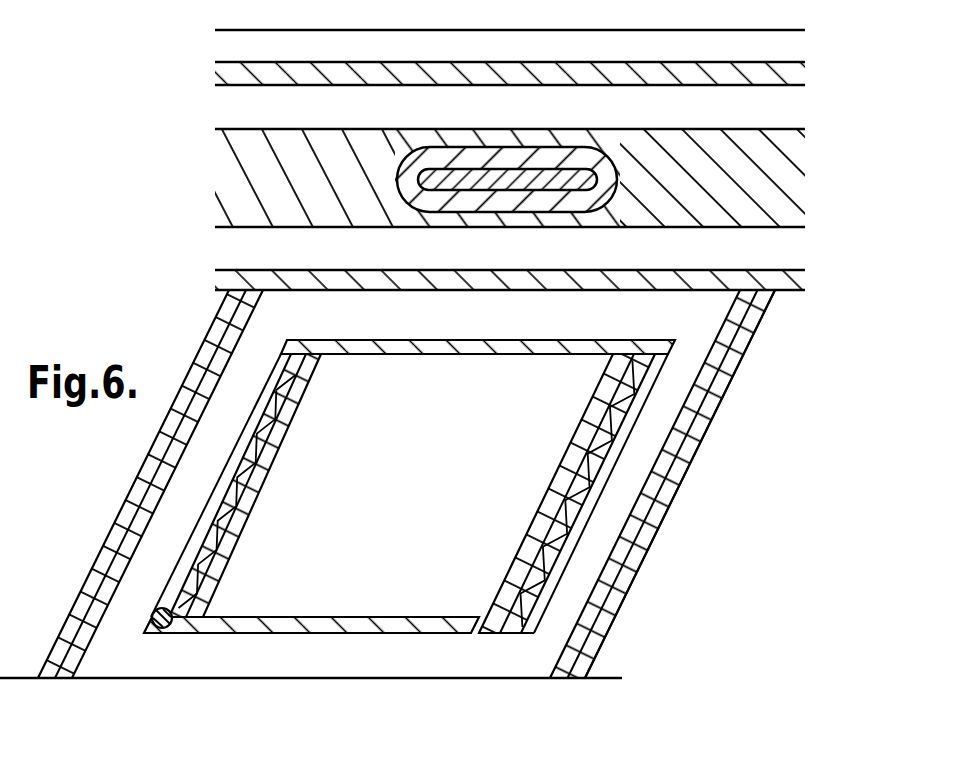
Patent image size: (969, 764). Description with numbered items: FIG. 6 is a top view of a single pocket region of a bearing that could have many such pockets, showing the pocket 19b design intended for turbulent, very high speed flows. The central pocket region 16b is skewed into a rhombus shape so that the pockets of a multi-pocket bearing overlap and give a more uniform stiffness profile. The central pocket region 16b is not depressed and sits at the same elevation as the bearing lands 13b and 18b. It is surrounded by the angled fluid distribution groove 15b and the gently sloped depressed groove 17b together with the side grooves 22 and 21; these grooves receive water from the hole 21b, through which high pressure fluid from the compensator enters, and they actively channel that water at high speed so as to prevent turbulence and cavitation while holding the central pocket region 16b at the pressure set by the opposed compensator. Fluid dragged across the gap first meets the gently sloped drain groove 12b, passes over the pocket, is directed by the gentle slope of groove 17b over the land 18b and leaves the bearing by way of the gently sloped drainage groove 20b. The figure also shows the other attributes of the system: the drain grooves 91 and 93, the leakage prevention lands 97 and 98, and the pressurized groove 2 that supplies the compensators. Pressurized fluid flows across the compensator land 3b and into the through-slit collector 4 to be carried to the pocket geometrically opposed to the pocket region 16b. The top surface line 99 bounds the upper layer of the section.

The pressurized groove 2 is at (240, 208).
The compensator land 3b is at (403, 173).
The through-slit collector 4 is at (418, 182).
The drain groove 91 is at (228, 70).
The drain groove 93 is at (227, 275).
The leakage prevention land 97 is at (770, 113).
The leakage prevention land 98 is at (760, 279).
The top surface 99 is at (783, 51).
The drain groove 12b is at (59, 665).
The land 13b is at (137, 587).
The fluid distribution groove 15b is at (212, 553).
The central pocket region 16b is at (400, 578).
The depressed groove 17b is at (540, 607).
The land 18b is at (592, 560).
The pocket 19b is at (729, 467).
The drainage groove 20b is at (658, 512).
The side groove 21 is at (383, 346).
The hole 21b is at (165, 630).
The side groove 22 is at (255, 623).